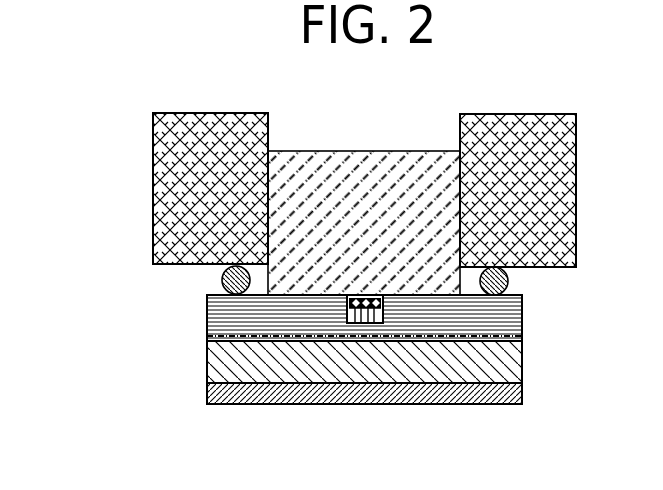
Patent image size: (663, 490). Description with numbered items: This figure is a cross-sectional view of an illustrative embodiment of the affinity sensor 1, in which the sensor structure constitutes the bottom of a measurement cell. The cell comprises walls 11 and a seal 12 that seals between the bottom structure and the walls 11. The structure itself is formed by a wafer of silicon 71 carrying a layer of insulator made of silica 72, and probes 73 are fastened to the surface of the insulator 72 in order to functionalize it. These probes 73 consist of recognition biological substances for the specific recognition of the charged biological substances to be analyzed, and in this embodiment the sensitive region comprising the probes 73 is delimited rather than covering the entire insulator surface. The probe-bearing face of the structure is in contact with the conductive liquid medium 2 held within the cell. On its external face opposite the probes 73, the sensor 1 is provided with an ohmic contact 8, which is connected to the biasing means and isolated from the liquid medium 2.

The affinity sensor 1 is at (128, 318).
The walls 11 is at (594, 194).
The seal 12 is at (555, 296).
The conductive liquid medium 2 is at (357, 153).
The wafer of silicon 71 is at (207, 348).
The layer of insulator made of silica 72 is at (514, 322).
The probes 73 is at (356, 332).
The ohmic contact 8 is at (514, 405).